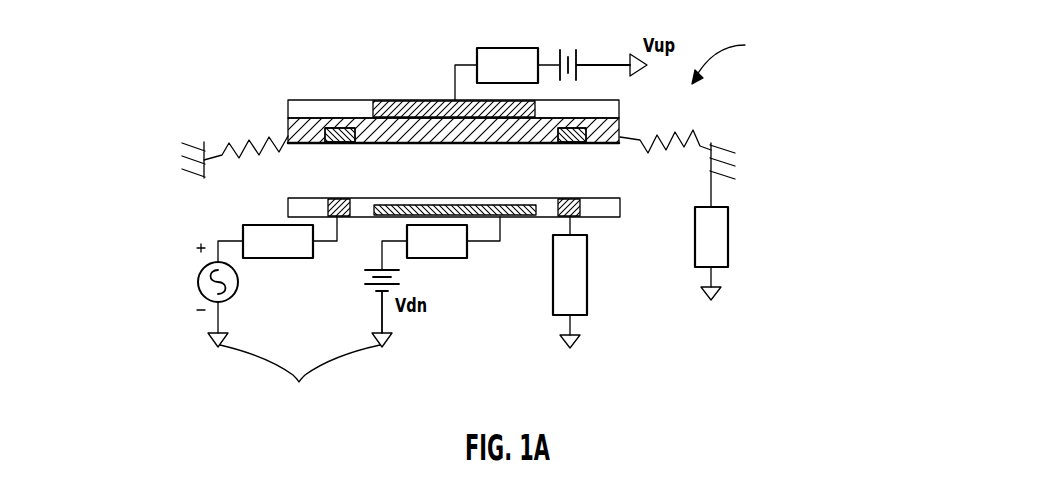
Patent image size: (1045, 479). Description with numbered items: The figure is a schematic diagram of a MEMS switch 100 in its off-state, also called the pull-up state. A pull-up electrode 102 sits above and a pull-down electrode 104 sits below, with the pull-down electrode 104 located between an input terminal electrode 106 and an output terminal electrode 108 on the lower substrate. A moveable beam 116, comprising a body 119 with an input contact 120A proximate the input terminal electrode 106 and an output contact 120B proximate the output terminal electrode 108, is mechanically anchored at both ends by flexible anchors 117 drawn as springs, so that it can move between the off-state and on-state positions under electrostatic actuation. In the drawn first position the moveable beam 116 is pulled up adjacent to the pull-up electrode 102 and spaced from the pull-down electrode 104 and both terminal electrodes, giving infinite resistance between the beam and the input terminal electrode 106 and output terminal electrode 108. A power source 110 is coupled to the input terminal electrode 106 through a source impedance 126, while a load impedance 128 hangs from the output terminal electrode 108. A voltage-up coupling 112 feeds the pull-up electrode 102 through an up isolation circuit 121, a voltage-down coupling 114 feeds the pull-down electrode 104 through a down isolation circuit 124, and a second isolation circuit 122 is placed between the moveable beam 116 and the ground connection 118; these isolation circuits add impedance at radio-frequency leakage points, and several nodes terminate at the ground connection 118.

The MEMS switch 100 is at (738, 57).
The pull-up electrode 102 is at (418, 100).
The pull-down electrode 104 is at (494, 203).
The input terminal electrode 106 is at (338, 198).
The output terminal electrode 108 is at (570, 203).
The power source 110 is at (198, 283).
The Vup coupling 112 is at (567, 47).
The Vdn coupling 114 is at (365, 280).
The moveable beam 116 is at (416, 134).
The flexible anchors 117 is at (262, 136).
The ground connection 118 is at (640, 73).
The body 119 is at (307, 127).
The input contact 120A is at (316, 142).
The output contact 120B is at (620, 142).
The up isolation circuit 121 is at (500, 48).
The second isolation circuit 122 is at (728, 250).
The down isolation circuit 124 is at (458, 260).
The Zsrc 126 is at (245, 225).
The Zload 128 is at (588, 275).